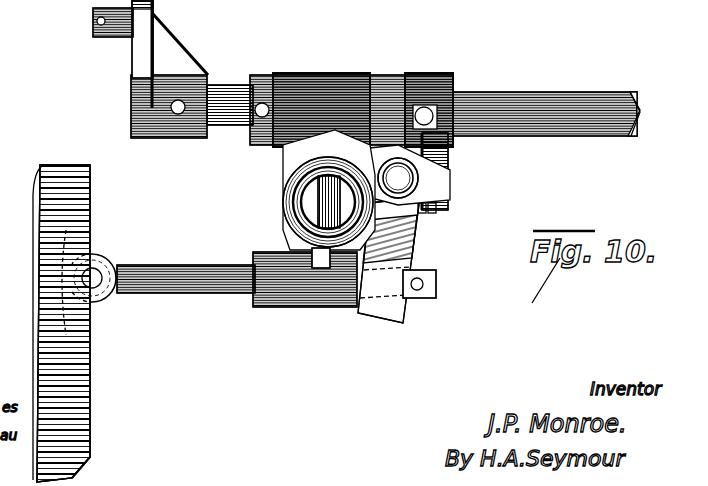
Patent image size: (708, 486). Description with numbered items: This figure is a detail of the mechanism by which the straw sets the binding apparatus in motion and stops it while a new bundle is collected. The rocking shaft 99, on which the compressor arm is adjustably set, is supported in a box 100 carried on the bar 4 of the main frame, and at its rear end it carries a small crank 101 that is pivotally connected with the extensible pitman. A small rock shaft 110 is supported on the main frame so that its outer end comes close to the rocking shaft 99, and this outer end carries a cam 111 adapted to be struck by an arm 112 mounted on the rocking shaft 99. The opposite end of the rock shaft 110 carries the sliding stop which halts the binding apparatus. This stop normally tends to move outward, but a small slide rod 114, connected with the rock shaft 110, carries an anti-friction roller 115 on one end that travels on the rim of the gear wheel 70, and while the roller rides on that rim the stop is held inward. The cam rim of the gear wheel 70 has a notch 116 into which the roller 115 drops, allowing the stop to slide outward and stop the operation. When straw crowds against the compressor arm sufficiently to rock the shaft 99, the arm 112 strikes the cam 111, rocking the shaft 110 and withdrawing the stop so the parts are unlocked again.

The bar 4 is at (285, 206).
The gear wheel 70 is at (73, 323).
The rocking shaft 99 is at (574, 136).
The box 100 is at (330, 99).
The crank 101 is at (150, 78).
The rock shaft 110 is at (413, 180).
The cam 111 is at (449, 148).
The arm 112 is at (447, 212).
The slide rod 114 is at (203, 293).
The anti-friction roller 115 is at (150, 240).
The notch 116 is at (90, 241).